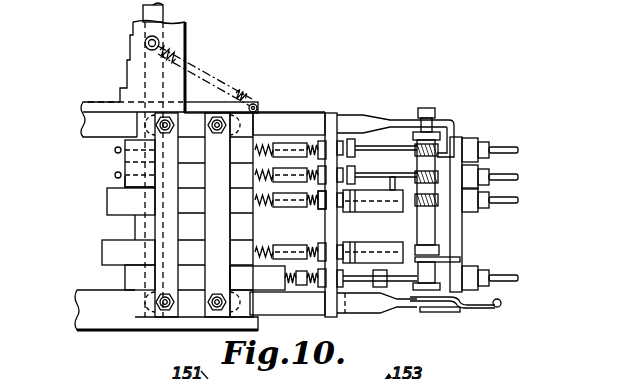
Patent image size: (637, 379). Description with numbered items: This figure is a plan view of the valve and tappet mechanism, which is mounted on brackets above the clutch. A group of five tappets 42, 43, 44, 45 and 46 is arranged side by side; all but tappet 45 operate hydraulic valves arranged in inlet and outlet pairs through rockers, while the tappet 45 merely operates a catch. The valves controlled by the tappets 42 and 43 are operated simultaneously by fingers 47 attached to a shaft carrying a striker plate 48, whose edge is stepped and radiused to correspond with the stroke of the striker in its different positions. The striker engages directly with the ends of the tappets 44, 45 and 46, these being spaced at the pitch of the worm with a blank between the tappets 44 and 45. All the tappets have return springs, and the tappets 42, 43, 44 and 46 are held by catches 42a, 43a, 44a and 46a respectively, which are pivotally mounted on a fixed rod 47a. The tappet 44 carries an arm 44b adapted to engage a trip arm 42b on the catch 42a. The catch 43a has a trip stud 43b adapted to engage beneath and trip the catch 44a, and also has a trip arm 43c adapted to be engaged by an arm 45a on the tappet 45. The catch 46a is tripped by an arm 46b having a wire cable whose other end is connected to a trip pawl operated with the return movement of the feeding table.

The striker plate 48 is at (190, 33).
The tappet 42 is at (117, 145).
The fingers 47 is at (115, 172).
The tappet 43 is at (116, 183).
The tappet 44 is at (107, 206).
The tappet 45 is at (101, 247).
The tappet 46 is at (124, 275).
The catch 43a is at (367, 166).
The catch 42a is at (386, 142).
The fixed rod 47a is at (434, 137).
The trip stud 43b is at (407, 156).
The catch 44a is at (341, 207).
The arm 44b is at (402, 213).
The arm 45a is at (362, 264).
The catch 46a is at (404, 285).
The trip arm 42b is at (441, 213).
The trip arm 43c is at (425, 246).
The arm 46b is at (484, 307).